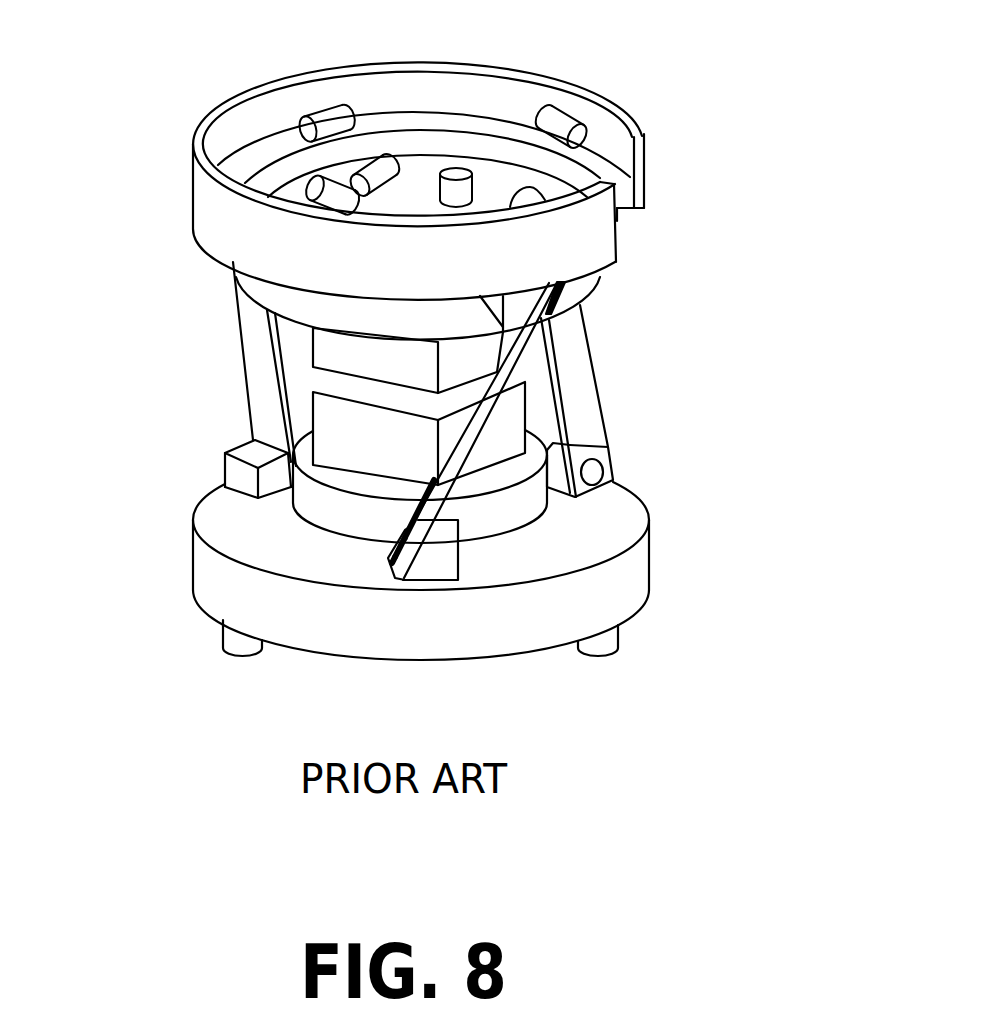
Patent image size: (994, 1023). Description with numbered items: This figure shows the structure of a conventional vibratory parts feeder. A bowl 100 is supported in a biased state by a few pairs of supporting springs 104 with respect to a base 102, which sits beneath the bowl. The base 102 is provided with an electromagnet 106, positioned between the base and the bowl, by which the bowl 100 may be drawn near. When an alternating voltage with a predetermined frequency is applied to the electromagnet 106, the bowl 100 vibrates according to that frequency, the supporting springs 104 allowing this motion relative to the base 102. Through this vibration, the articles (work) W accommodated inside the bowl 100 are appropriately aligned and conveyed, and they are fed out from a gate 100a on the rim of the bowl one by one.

The bowl 100 is at (213, 207).
The gate 100a is at (652, 179).
The base 102 is at (632, 561).
The supporting springs 104 is at (574, 352).
The electromagnet 106 is at (335, 428).
The article (work) W is at (557, 124).